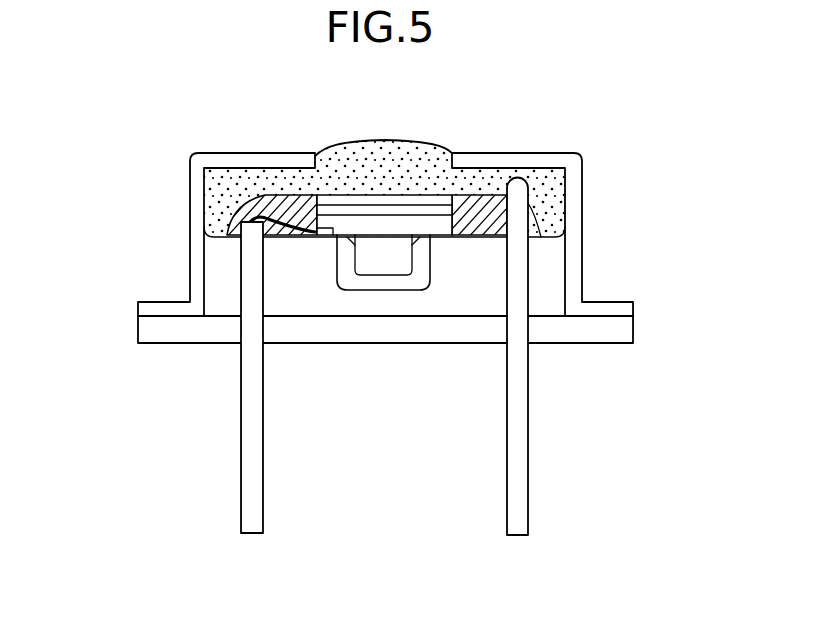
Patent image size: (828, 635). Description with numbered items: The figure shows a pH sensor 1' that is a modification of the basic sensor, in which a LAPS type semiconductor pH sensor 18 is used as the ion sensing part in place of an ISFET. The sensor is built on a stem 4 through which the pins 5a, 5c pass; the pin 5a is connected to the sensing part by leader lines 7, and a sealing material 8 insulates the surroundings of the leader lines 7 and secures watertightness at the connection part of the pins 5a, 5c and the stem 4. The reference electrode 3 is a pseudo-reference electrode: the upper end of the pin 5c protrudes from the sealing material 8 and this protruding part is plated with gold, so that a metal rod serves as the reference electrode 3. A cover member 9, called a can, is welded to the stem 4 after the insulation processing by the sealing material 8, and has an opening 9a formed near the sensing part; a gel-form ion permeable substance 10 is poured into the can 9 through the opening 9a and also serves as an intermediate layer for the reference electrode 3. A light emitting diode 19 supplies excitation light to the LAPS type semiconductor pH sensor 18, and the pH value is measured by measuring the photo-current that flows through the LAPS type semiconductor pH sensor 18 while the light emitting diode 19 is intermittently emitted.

The pH sensor 1' is at (377, 312).
The reference electrode 3 is at (517, 183).
The stem 4 is at (634, 331).
The pin 5a is at (240, 410).
The pin 5c is at (530, 403).
The leader lines 7 is at (292, 196).
The sealing material 8 is at (266, 195).
The cover member 9 is at (583, 254).
The opening 9a is at (449, 152).
The gel-form ion permeable substance 10 is at (218, 205).
The LAPS type semiconductor pH sensor 18 is at (352, 193).
The light emitting diode 19 is at (381, 290).